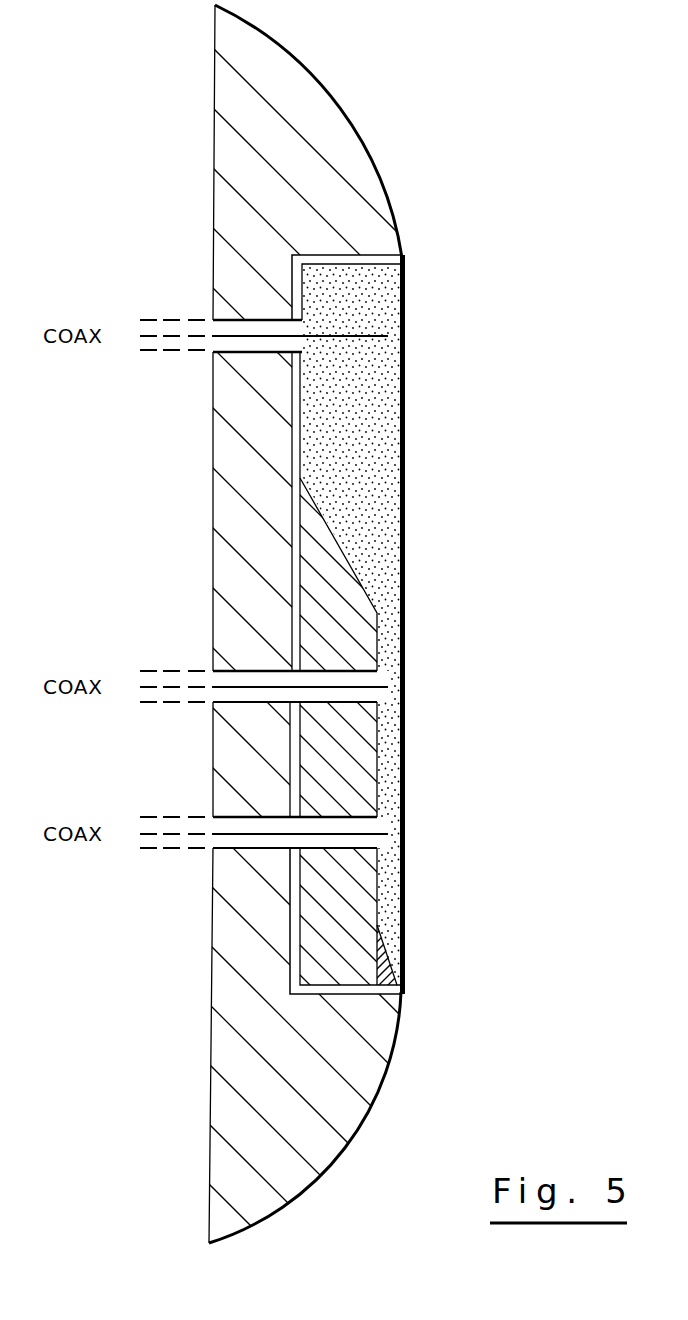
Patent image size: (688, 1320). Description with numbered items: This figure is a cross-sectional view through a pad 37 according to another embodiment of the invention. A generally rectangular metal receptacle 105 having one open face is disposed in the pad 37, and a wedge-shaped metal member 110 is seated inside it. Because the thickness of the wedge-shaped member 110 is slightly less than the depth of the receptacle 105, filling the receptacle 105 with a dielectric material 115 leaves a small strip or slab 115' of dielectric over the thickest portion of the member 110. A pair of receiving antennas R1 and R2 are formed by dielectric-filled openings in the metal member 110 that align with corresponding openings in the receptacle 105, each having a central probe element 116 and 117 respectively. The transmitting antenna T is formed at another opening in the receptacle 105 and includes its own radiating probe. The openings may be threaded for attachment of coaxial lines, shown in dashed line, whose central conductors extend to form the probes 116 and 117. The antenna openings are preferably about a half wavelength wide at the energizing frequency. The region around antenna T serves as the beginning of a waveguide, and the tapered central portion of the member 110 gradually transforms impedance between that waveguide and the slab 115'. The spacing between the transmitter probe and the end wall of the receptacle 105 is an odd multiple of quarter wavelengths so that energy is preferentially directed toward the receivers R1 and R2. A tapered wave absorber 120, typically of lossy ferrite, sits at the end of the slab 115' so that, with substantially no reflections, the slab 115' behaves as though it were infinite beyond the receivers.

The pad 37 is at (342, 98).
The metal receptacle 105 is at (289, 908).
The dielectric material 115 is at (391, 482).
The slab of dielectric material 115' is at (429, 842).
The transmitting antenna T is at (362, 332).
The central probe element 116 is at (385, 688).
The central probe element 117 is at (387, 833).
The receiving antenna R1 is at (355, 670).
The wedge-shaped metal member 110 is at (365, 735).
The receiving antenna R2 is at (347, 851).
The tapered wave absorber 120 is at (392, 964).